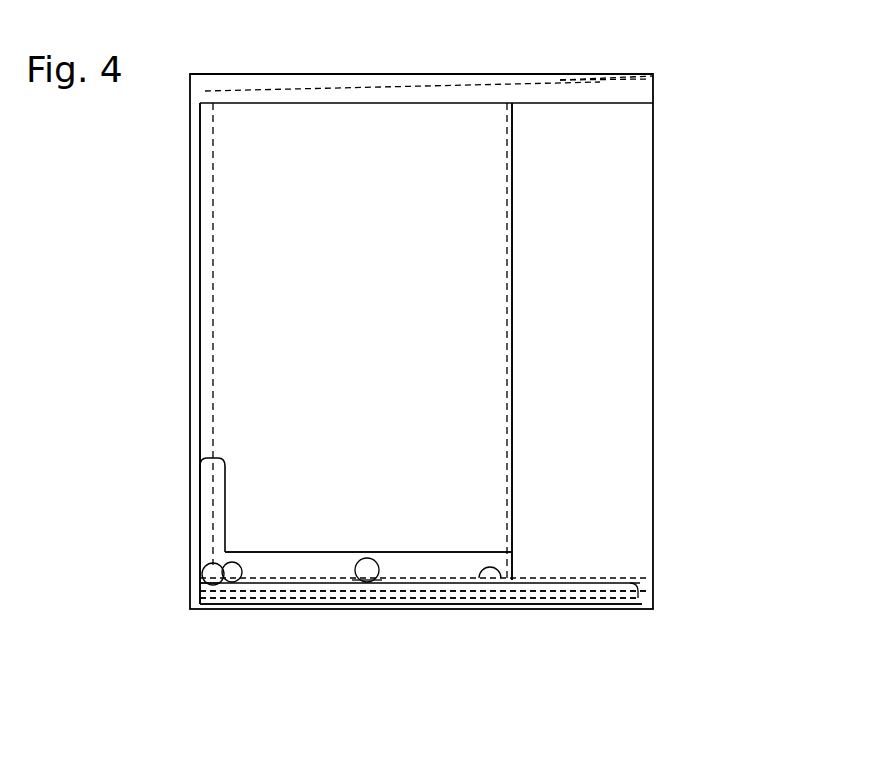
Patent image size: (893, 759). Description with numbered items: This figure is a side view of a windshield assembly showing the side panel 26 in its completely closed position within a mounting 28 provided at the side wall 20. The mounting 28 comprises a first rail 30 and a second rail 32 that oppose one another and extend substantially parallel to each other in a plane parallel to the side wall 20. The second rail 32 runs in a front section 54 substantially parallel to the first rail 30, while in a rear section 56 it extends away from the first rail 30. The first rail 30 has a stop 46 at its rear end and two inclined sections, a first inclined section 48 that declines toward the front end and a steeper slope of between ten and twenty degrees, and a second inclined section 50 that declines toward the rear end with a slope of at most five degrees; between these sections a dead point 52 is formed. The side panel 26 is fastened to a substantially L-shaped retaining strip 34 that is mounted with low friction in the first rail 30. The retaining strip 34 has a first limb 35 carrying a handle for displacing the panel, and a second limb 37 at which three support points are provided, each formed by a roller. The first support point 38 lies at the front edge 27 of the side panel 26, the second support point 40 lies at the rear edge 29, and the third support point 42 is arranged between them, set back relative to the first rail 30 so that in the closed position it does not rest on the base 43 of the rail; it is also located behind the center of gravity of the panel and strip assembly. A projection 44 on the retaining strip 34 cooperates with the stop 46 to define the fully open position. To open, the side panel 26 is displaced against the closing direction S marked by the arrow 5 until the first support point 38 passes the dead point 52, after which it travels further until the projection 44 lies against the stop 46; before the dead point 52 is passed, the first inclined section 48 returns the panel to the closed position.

The sliding direction 5 is at (432, 330).
The side wall 20 is at (625, 183).
The side panel 26 is at (235, 168).
The front edge 27 is at (202, 228).
The mounting 28 is at (658, 80).
The rear edge 29 is at (513, 252).
The first rail 30 is at (507, 590).
The second rail 32 is at (460, 85).
The retaining strip 34 is at (302, 555).
The first limb 35 is at (202, 502).
The second limb 37 is at (423, 585).
The first support point 38 is at (218, 585).
The second support point 40 is at (490, 570).
The third support point 42 is at (372, 560).
The base 43 is at (340, 590).
The projection 44 is at (382, 575).
The stop 46 is at (629, 585).
The first inclined section 48 is at (200, 585).
The second inclined section 50 is at (300, 590).
The dead point 52 is at (238, 568).
The front section 54 is at (385, 85).
The rear section 56 is at (575, 80).